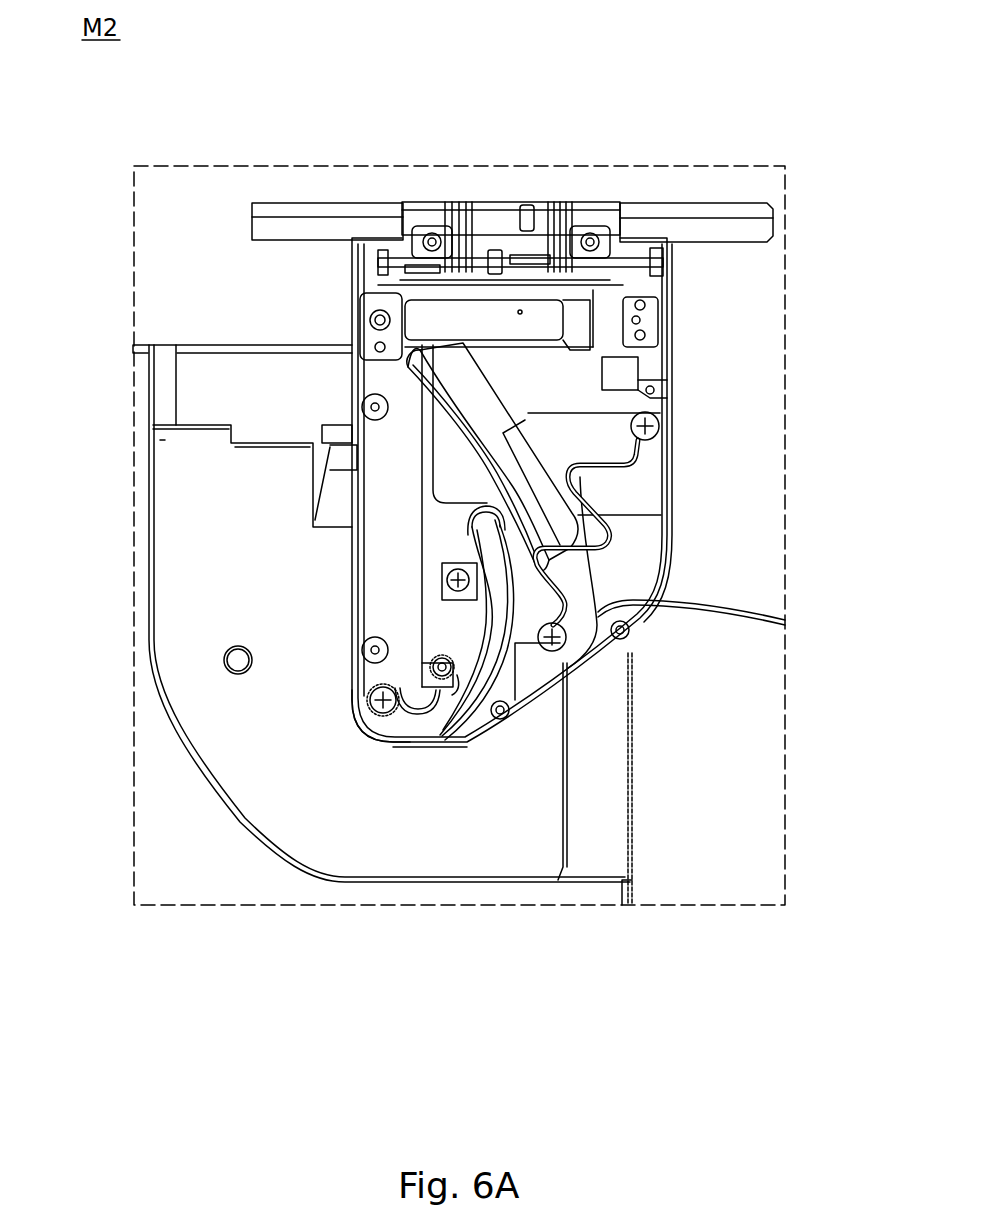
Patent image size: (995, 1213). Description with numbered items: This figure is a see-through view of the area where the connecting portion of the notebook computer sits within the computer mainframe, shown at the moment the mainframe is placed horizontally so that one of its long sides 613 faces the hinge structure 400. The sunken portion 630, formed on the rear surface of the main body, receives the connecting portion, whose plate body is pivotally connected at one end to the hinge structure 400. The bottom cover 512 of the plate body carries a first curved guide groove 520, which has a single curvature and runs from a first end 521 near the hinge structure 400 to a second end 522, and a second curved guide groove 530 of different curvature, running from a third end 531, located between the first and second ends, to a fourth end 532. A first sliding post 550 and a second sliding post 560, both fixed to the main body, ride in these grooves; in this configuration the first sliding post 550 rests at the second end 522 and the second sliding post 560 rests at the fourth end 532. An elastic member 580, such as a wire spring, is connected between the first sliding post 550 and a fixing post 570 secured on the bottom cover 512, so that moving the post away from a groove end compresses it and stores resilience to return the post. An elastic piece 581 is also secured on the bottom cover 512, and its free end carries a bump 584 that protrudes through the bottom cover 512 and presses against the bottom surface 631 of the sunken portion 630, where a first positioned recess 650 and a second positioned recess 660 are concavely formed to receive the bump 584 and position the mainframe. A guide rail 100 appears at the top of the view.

The guide rail 100 is at (677, 197).
The hinge structure 400 is at (573, 197).
The bottom cover 512 is at (668, 542).
The first curved guide groove 520 is at (482, 458).
The first end 521 is at (408, 352).
The second end 522 is at (560, 660).
The second curved guide groove 530 is at (425, 728).
The third end 531 is at (470, 515).
The fourth end 532 is at (365, 708).
The first sliding post 550 is at (567, 633).
The second sliding post 560 is at (375, 712).
The fixing post 570 is at (658, 422).
The elastic member 580 is at (583, 503).
The elastic piece 581 is at (452, 625).
The bump 584 is at (425, 668).
The long side 613 is at (145, 343).
The sunken portion 630 is at (175, 338).
The bottom surface 631 is at (190, 498).
The first positioned recess 650 is at (440, 688).
The second positioned recess 660 is at (222, 656).